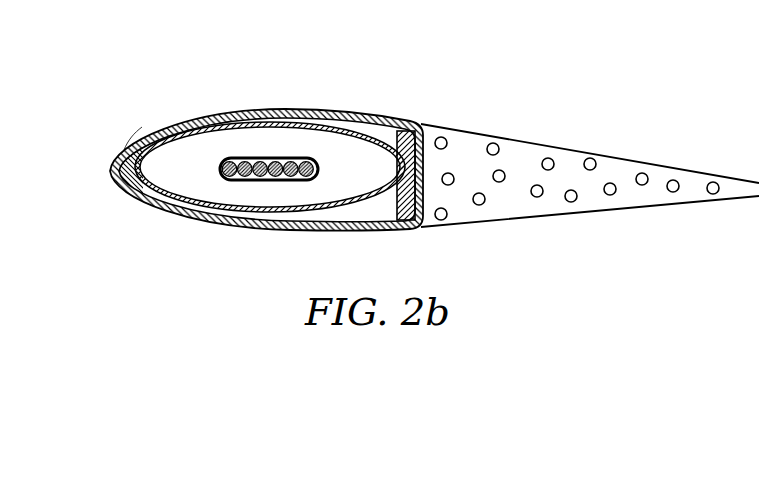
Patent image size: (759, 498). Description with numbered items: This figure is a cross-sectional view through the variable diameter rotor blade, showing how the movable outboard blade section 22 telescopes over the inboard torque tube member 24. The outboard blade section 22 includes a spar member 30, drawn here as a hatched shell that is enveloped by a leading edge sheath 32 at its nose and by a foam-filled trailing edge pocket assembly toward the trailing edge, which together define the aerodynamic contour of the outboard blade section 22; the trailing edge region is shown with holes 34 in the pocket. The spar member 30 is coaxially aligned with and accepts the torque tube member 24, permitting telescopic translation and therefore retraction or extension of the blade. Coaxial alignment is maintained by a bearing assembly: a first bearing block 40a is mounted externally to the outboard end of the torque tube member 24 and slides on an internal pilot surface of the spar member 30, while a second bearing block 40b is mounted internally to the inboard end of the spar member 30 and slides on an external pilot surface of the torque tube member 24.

The outboard blade section 22 is at (511, 132).
The torque tube member 24 is at (281, 113).
The spar member 30 is at (368, 116).
The leading edge sheath 32 is at (124, 151).
The holes 34 is at (607, 155).
The first bearing block 40a is at (123, 188).
The second bearing block 40b is at (404, 222).